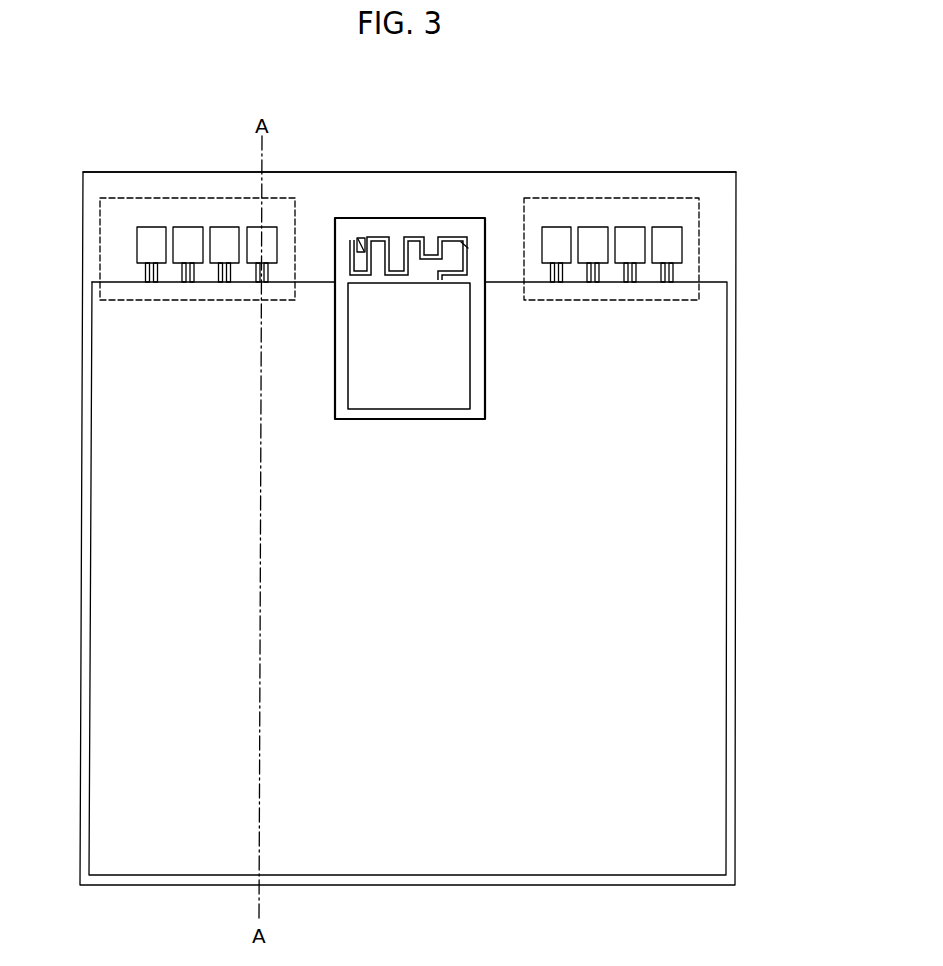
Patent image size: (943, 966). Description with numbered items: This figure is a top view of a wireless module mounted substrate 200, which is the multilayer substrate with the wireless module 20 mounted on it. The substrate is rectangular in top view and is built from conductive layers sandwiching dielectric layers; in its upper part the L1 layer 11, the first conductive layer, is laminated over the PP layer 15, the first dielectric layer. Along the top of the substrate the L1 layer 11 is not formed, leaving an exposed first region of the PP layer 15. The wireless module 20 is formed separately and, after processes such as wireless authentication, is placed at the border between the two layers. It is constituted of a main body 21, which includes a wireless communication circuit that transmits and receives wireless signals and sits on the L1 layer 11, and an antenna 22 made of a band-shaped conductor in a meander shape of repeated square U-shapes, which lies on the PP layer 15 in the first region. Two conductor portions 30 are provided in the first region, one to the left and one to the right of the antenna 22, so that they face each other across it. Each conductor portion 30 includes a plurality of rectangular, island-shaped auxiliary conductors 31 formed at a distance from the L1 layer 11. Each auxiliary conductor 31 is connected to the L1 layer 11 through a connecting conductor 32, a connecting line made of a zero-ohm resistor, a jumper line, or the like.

The wireless module mounted substrate 200 is at (749, 124).
The L1 layer 11 is at (718, 401).
The PP layer 15 is at (718, 265).
The wireless module 20 is at (370, 217).
The main body 21 is at (442, 338).
The antenna 22 is at (414, 237).
The conductor portion 30 is at (211, 198).
The auxiliary conductor 31 is at (152, 226).
The connecting conductor 32 is at (146, 272).